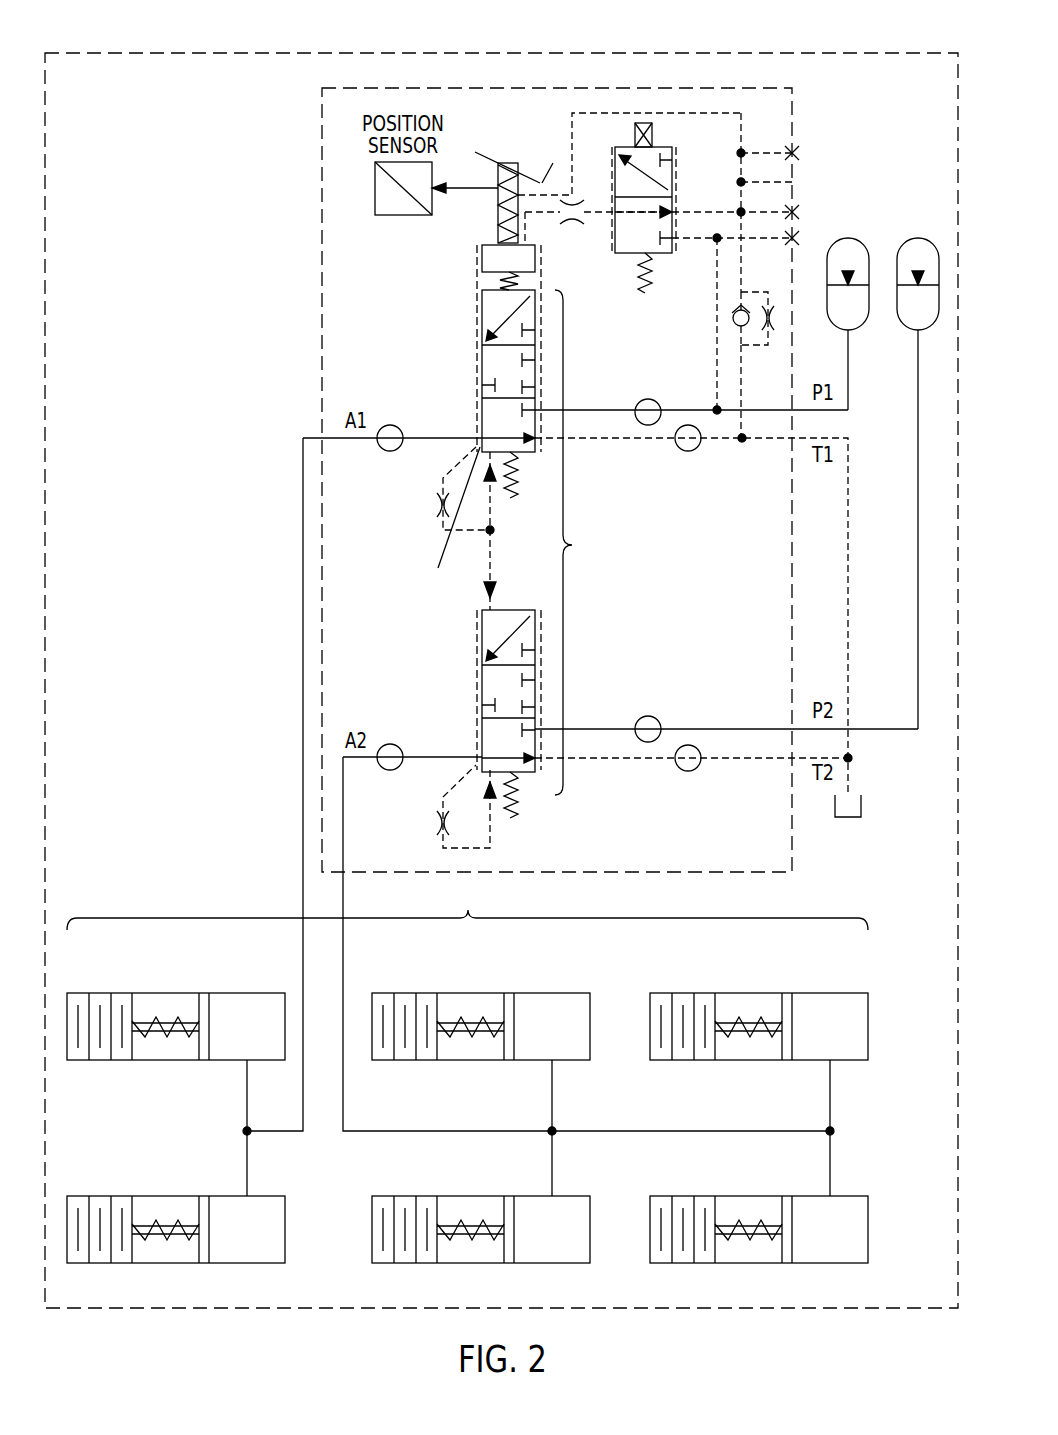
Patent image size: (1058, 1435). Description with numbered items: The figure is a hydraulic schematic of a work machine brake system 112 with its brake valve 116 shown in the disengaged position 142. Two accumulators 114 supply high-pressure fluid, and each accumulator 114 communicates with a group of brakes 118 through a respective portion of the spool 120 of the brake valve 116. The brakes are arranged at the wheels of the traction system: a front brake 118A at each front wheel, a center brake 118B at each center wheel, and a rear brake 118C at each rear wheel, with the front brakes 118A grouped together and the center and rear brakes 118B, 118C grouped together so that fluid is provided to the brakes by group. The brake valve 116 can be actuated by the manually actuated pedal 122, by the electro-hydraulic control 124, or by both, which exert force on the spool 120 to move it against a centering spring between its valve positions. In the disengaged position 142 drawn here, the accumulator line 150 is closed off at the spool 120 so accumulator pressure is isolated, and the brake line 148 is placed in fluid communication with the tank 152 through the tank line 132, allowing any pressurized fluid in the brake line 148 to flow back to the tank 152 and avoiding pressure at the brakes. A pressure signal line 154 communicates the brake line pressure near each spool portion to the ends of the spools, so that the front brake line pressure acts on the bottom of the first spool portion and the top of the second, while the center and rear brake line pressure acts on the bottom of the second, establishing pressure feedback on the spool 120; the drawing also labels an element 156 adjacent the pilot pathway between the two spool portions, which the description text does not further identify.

The brake system 112 is at (764, 41).
The accumulator 114 is at (917, 237).
The brake valve 116 is at (556, 88).
The group of brakes 118 is at (467, 907).
The front brake 118A is at (176, 1062).
The center brake 118B is at (481, 1062).
The rear brake 118C is at (759, 1062).
The spool 120 is at (543, 542).
The manually actuated pedal 122 is at (492, 160).
The electro-hydraulic control 124 is at (670, 148).
The tank line 132 is at (688, 452).
The disengaged position 142 is at (482, 410).
The brake line 148 is at (385, 452).
The accumulator line 150 is at (652, 400).
The tank 152 is at (861, 806).
The pressure signal line 154 is at (476, 452).
The pilot actuator 156 is at (483, 593).